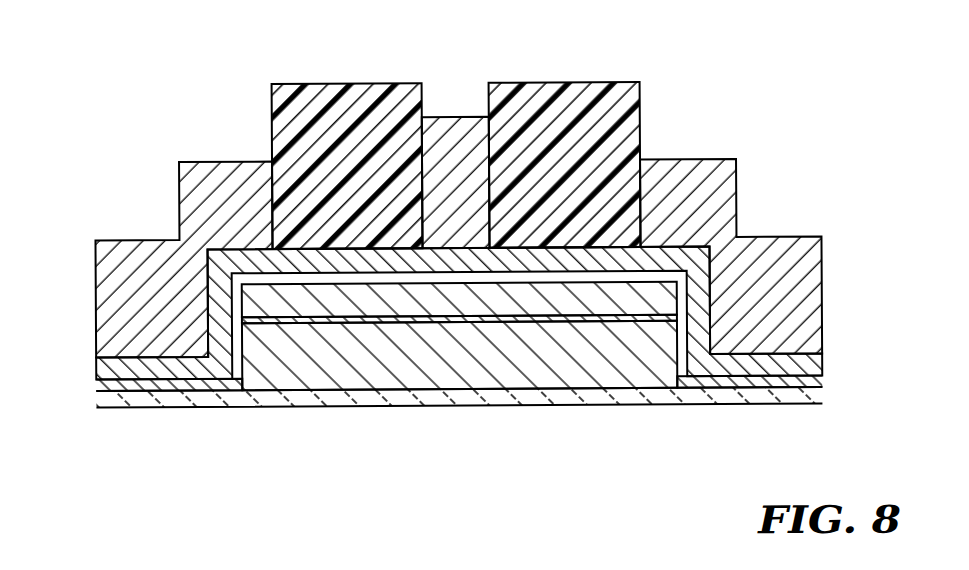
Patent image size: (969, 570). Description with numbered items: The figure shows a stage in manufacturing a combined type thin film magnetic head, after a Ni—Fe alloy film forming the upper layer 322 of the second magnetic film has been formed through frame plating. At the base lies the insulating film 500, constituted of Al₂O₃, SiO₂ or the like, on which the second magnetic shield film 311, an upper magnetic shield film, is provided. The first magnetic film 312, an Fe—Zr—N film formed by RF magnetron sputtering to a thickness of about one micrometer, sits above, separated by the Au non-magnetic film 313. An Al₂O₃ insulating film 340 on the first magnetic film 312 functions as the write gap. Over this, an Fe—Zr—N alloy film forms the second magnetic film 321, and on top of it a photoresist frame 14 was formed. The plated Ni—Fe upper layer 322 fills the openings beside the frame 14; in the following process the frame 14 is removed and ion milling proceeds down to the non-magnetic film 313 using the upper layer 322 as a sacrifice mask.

The frame 14 is at (341, 92).
The upper layer of the second magnetic film 322 is at (453, 124).
The insulating film 340 is at (697, 372).
The first magnetic film 312 is at (602, 305).
The non-magnetic film 313 is at (497, 322).
The second magnetic shield film 311 is at (283, 376).
The second magnetic film 321 is at (768, 380).
The insulating film 500 is at (382, 398).